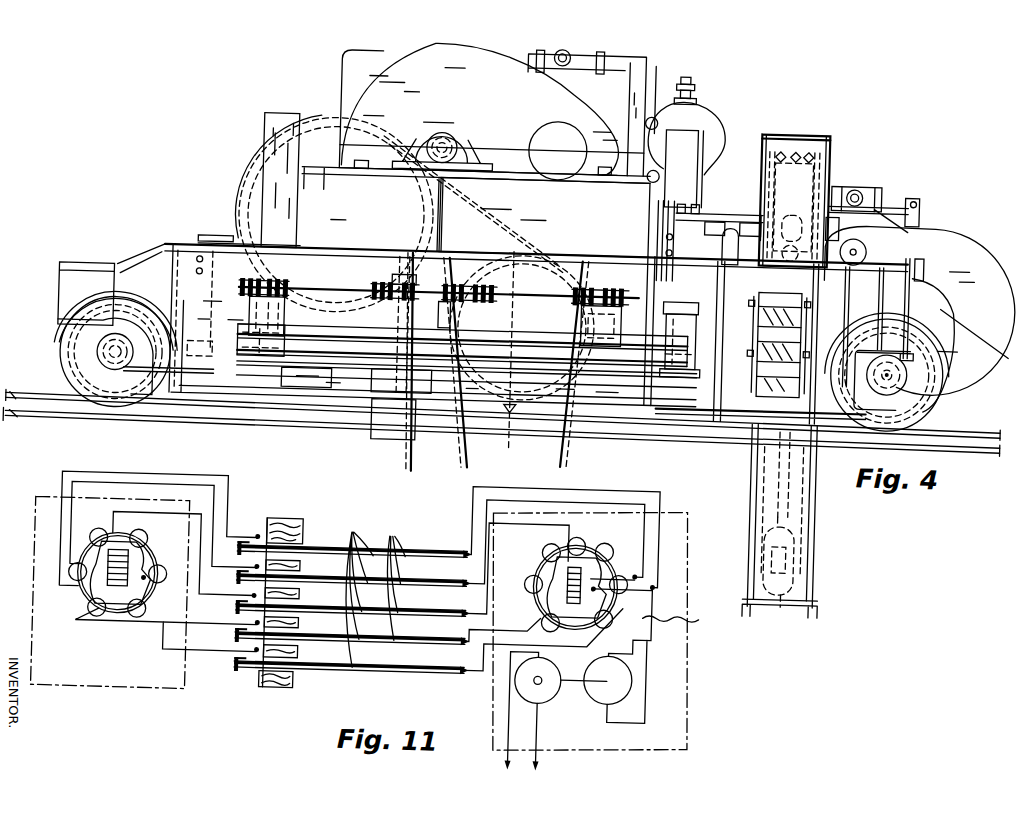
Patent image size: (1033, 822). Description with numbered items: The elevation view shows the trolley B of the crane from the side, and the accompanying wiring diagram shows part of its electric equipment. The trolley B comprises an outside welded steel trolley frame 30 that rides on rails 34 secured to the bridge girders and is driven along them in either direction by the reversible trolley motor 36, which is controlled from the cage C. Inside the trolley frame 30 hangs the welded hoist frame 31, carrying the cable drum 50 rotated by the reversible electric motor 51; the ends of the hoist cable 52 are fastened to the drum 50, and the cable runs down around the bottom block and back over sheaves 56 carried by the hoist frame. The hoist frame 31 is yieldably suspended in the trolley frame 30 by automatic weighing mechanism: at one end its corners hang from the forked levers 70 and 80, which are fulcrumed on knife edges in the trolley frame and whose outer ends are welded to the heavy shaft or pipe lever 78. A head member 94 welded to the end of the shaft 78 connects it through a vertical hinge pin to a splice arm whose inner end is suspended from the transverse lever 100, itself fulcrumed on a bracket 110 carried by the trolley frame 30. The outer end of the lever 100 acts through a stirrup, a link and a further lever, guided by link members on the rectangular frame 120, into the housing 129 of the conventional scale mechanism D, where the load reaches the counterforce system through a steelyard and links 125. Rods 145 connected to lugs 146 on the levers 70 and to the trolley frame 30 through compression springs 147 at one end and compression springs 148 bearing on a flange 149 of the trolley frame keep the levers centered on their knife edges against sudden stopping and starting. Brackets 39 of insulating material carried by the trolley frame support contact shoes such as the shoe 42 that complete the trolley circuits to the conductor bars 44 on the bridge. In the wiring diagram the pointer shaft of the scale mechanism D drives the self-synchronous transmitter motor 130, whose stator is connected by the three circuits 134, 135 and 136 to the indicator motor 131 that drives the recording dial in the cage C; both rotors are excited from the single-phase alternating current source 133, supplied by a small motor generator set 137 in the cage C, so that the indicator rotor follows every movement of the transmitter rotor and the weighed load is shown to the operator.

In FIG. 4, the trolley frame 30 is at (143, 264).
In FIG. 4, the hoist frame 31 is at (213, 236).
In FIG. 4, the rail 34 is at (47, 399).
In FIG. 4, the trolley motor 36 is at (905, 178).
In FIG. 4, the cable drum 50 is at (260, 181).
In FIG. 4, the reversible electric motor 51 is at (521, 44).
In FIG. 4, the hoist cable 52 is at (568, 437).
In FIG. 4, the sheave 56 is at (509, 430).
In FIG. 4, the lever or head member 70 is at (286, 340).
In FIG. 4, the shaft or pipe lever 78 is at (505, 330).
In FIG. 4, the lever or head member 80 is at (583, 305).
In FIG. 4, the head member 94 is at (668, 290).
In FIG. 4, the transverse lever 100 is at (753, 198).
In FIG. 4, the bracket 110 is at (748, 206).
In FIG. 4, the rectangular frame 120 is at (808, 525).
In FIG. 4, the link 125 is at (790, 477).
In FIG. 4, the housing 129 is at (807, 490).
In FIG. 4, the rod 145 is at (300, 293).
In FIG. 4, the lug 146 is at (358, 280).
In FIG. 4, the compression spring 147 is at (262, 276).
In FIG. 4, the compression spring 148 is at (398, 283).
In FIG. 4, the flange 149 is at (446, 292).
In FIG. 11, the bracket 39 is at (286, 530).
In FIG. 11, the contact shoe 42 is at (355, 589).
In FIG. 11, the conductor bar 44 is at (389, 576).
In FIG. 11, the self-synchronous motor 130 is at (118, 624).
In FIG. 11, the indicator motor 131 is at (592, 561).
In FIG. 11, the single-phase alternating current source of excitation 133 is at (690, 617).
In FIG. 11, the circuit 134 is at (232, 611).
In FIG. 11, the circuit 135 is at (232, 639).
In FIG. 11, the circuit 136 is at (232, 668).
In FIG. 11, the motor generator set 137 is at (587, 690).
In FIG. 4, the trolley B is at (60, 268).
In FIG. 11, the trolley B is at (148, 682).
In FIG. 11, the cage C is at (673, 716).
In FIG. 4, the scale mechanism D is at (812, 118).